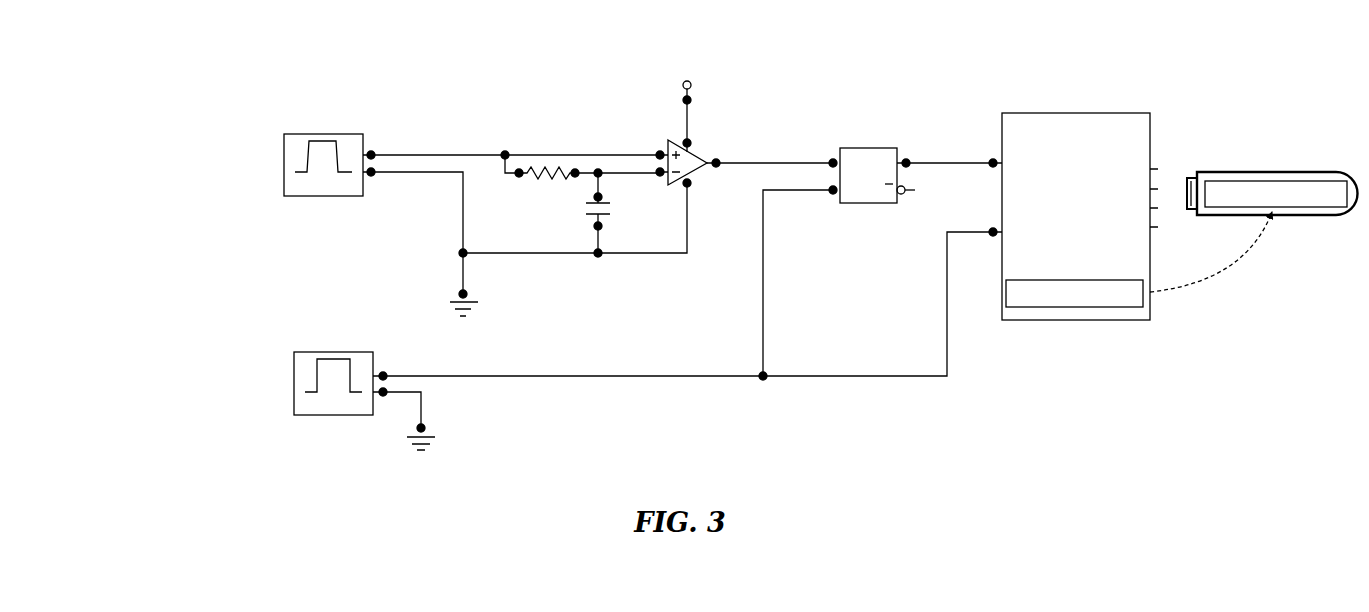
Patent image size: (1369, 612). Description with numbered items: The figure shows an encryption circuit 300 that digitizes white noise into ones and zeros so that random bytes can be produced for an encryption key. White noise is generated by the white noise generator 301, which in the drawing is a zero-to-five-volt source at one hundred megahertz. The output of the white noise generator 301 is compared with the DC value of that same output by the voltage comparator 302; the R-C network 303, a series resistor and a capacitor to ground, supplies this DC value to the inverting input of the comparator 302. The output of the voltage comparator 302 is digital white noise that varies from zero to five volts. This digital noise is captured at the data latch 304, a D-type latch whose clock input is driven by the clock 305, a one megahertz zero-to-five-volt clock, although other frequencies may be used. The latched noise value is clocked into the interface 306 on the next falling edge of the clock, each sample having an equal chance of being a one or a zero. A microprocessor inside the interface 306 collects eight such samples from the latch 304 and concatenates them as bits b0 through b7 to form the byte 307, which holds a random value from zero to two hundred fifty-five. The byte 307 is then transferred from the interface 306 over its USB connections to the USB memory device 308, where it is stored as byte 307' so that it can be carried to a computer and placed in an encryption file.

The encryption circuit 300 is at (430, 66).
The white noise generator 301 is at (284, 160).
The voltage comparator 302 is at (697, 173).
The R-C network 303 is at (613, 270).
The data latch 304 is at (859, 204).
The clock 305 is at (294, 378).
The interface 306 is at (1031, 320).
The byte 307 is at (1074, 328).
The stored byte 307' is at (1248, 236).
The USB memory device 308 is at (1287, 172).